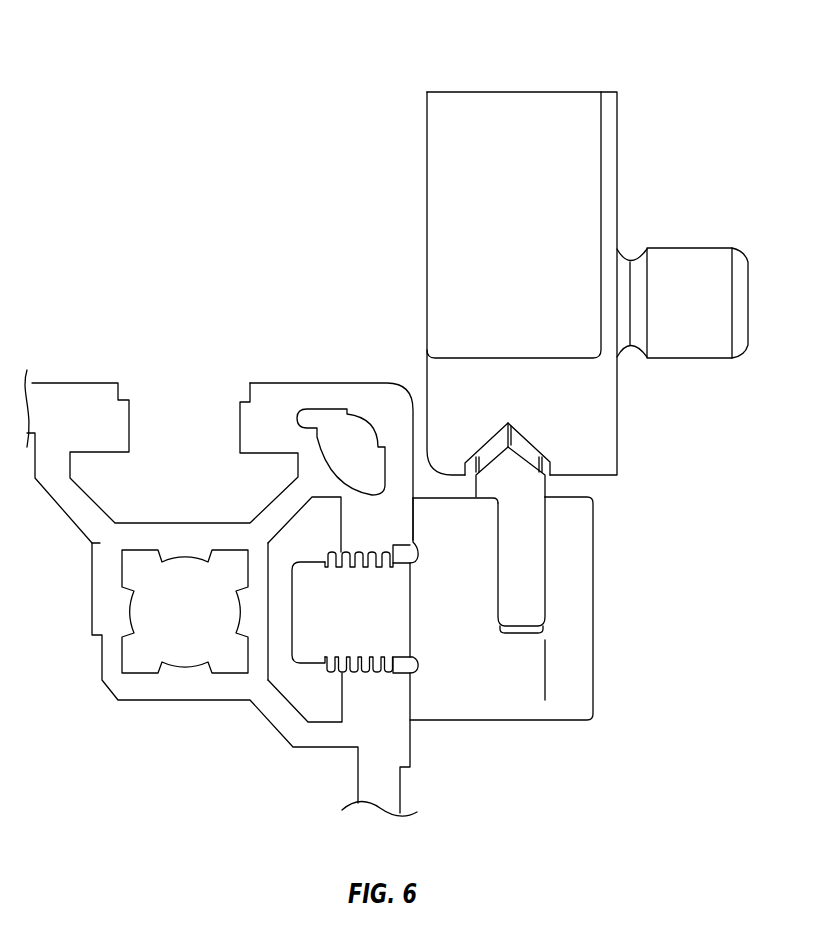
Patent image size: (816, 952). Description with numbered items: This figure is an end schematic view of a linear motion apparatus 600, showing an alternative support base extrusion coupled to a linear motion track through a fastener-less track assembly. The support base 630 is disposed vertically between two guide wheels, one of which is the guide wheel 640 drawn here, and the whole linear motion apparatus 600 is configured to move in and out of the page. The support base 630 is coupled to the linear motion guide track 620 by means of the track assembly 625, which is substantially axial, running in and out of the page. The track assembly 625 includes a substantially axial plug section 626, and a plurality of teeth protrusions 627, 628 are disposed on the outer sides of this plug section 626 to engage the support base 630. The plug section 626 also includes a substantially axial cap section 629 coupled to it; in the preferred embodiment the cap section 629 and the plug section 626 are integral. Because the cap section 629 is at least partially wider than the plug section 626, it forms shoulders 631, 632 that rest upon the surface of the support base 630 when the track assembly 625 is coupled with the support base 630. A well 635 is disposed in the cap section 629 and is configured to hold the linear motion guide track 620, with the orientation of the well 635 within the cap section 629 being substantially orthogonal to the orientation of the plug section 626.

The linear motion apparatus 600 is at (290, 62).
The linear motion guide track 620 is at (548, 591).
The track assembly 625 is at (536, 655).
The plug section 626 is at (304, 566).
The teeth protrusions 627 is at (327, 548).
The teeth protrusions 628 is at (340, 672).
The cap section 629 is at (490, 675).
The support base 630 is at (72, 383).
The shoulder 631 is at (464, 716).
The shoulder 632 is at (465, 535).
The well 635 is at (522, 638).
The guide wheel 640 is at (545, 233).